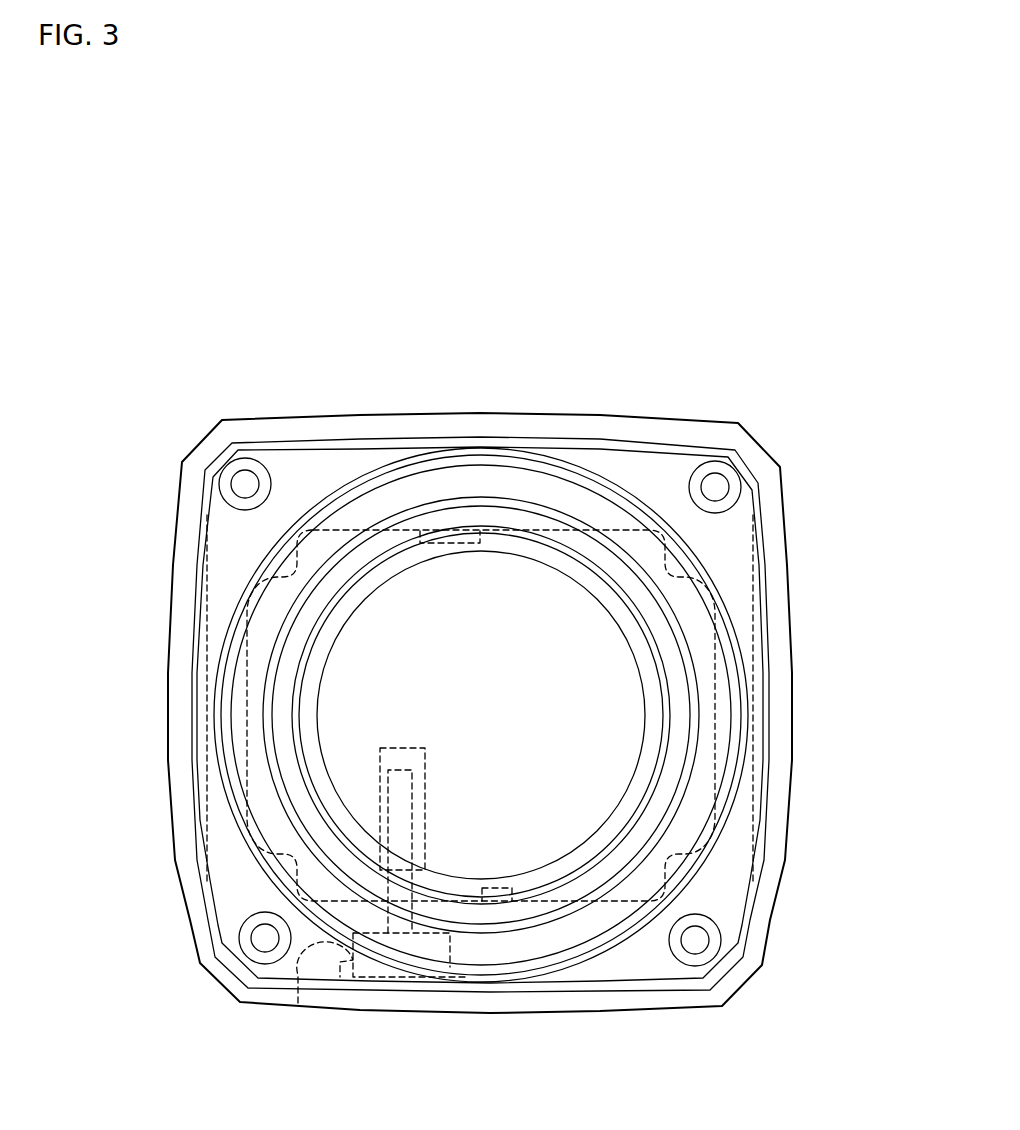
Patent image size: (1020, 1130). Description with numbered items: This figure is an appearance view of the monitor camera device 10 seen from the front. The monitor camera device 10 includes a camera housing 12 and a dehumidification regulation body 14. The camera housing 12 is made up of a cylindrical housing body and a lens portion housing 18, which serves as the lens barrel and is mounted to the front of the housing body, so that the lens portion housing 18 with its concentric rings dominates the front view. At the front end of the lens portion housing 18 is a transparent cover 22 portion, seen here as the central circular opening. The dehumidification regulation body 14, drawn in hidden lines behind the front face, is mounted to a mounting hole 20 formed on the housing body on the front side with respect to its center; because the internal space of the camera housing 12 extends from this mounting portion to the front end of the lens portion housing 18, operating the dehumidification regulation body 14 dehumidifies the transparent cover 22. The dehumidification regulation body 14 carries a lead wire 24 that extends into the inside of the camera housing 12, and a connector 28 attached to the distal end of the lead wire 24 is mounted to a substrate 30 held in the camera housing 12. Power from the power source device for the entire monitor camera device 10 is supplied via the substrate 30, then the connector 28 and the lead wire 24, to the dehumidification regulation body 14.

The monitor camera device 10 is at (558, 244).
The camera housing 12 is at (607, 392).
The dehumidification regulation body 14 is at (362, 977).
The lens portion housing 18 is at (473, 410).
The mounting hole 20 is at (298, 1003).
The transparent cover 22 is at (477, 848).
The lead wire 24 is at (403, 828).
The connector 28 is at (388, 770).
The substrate 30 is at (257, 712).